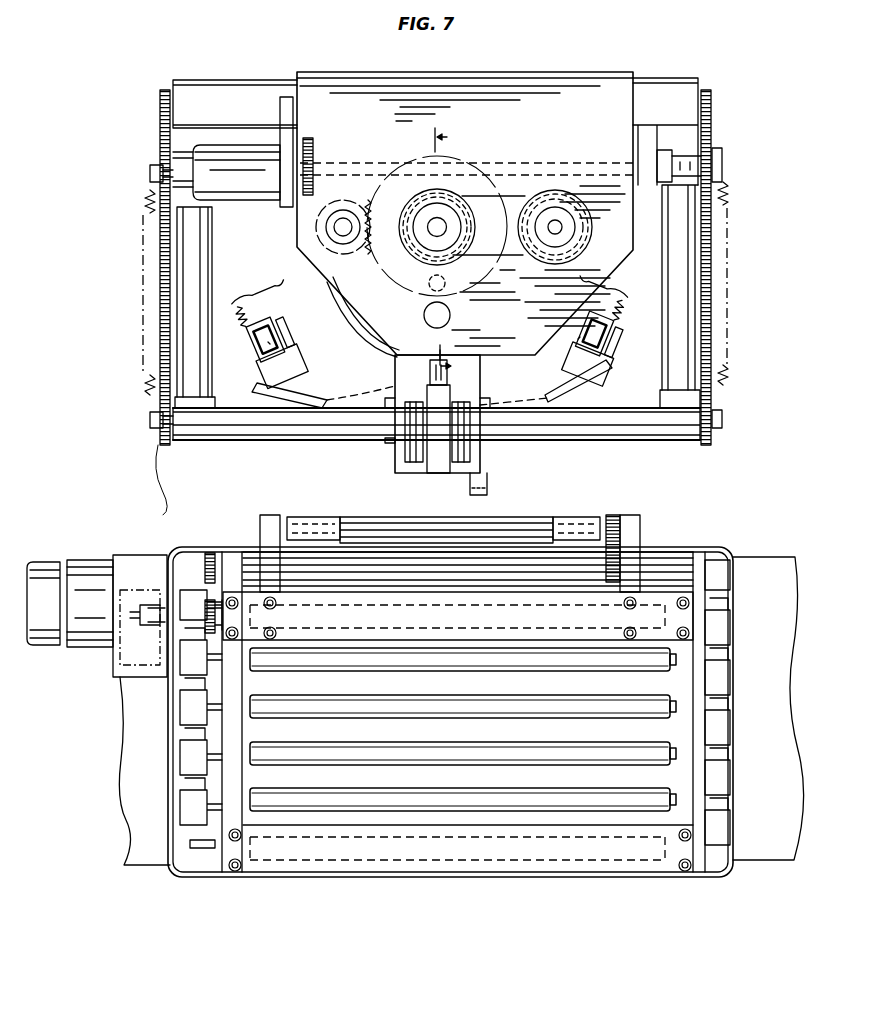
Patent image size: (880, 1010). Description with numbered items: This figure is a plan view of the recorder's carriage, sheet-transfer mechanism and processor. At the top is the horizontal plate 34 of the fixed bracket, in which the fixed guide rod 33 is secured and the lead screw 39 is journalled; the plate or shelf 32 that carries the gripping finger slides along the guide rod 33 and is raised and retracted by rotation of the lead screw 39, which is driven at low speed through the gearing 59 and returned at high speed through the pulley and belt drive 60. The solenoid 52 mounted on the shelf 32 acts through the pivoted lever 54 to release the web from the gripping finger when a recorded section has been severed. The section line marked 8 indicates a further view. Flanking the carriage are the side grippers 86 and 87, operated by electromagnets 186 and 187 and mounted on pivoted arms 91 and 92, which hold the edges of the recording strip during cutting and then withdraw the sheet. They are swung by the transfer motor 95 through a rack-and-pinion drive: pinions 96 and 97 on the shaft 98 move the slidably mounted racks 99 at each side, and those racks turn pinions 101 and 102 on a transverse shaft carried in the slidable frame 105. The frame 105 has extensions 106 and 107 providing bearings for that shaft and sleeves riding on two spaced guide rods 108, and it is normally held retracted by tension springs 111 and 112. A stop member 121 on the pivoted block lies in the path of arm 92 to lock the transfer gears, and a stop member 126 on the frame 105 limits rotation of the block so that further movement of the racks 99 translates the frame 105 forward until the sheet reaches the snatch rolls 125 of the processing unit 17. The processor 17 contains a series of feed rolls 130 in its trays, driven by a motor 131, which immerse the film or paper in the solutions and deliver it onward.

The section line 8- 8 is at (449, 251).
The processing unit 17 is at (348, 885).
The plate or shelf 32 is at (472, 369).
The fixed guide rod 33 is at (450, 314).
The horizontal plate 34 is at (530, 86).
The lead screw 39 is at (447, 226).
The solenoid 52 is at (408, 446).
The pivoted lever 54 is at (432, 373).
The gearing 59 is at (367, 250).
The pulley and belt drive 60 is at (542, 256).
The side gripper 86 is at (290, 300).
The side gripper 87 is at (613, 311).
The pivoted arm 91 is at (283, 390).
The pivoted arm 92 is at (585, 378).
The transfer motor 95 is at (248, 197).
The pinion 96 is at (160, 177).
The pinion 97 is at (716, 161).
The shaft 98 is at (578, 161).
The racks 99 is at (161, 113).
The pinion 101 is at (158, 424).
The pinion 102 is at (721, 416).
The slidable frame 105 is at (260, 431).
The extension 106 is at (216, 396).
The extension 107 is at (661, 397).
The guide rods 108 is at (206, 259).
The tension spring 111 is at (145, 207).
The tension spring 112 is at (736, 212).
The stop member 121 is at (472, 490).
The snatch rolls 125 is at (312, 517).
The stop member 126 is at (385, 442).
The feed rolls 130 is at (483, 666).
The motor 131 is at (80, 646).
The electromagnet 186 is at (268, 342).
The electromagnet 187 is at (578, 339).